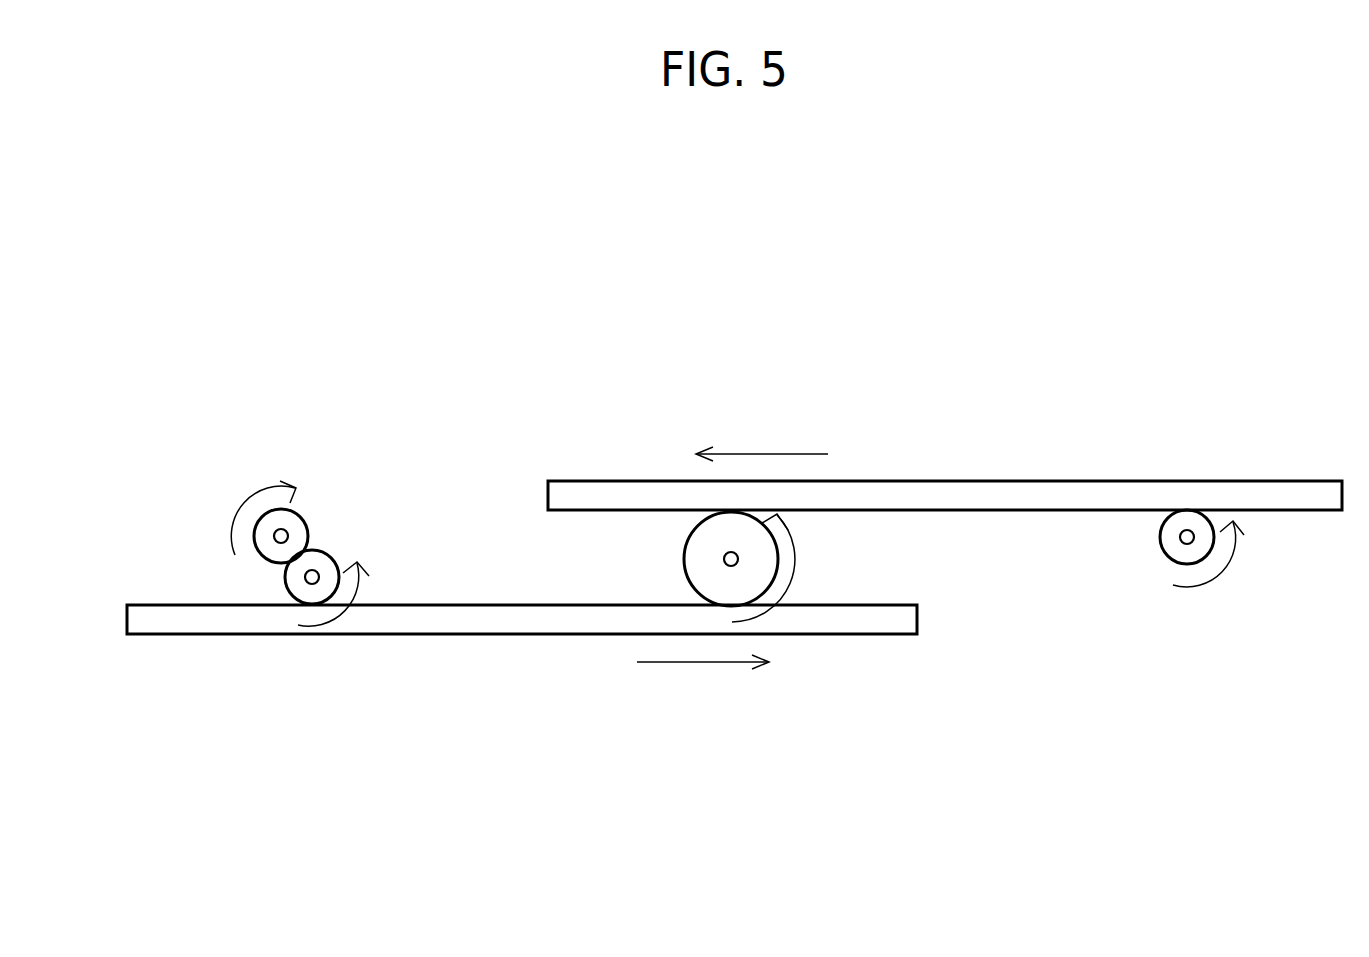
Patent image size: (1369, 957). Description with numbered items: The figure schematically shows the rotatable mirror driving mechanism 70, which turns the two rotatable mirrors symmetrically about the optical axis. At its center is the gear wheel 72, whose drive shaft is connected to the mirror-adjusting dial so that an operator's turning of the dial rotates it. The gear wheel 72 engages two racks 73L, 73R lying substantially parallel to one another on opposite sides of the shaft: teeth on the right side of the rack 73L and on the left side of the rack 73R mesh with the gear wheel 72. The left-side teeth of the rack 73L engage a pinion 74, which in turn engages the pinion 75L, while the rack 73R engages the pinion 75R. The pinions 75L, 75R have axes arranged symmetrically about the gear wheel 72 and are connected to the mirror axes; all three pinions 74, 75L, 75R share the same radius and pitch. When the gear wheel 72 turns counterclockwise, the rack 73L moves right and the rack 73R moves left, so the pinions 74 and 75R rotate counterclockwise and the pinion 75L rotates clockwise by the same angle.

The rotatable mirror driving mechanism 70 is at (847, 668).
The gear wheel 72 is at (684, 553).
The rack 73L is at (466, 637).
The rack 73R is at (1020, 482).
The pinion 74 is at (332, 555).
The pinion 75L is at (308, 515).
The pinion 75R is at (1163, 553).